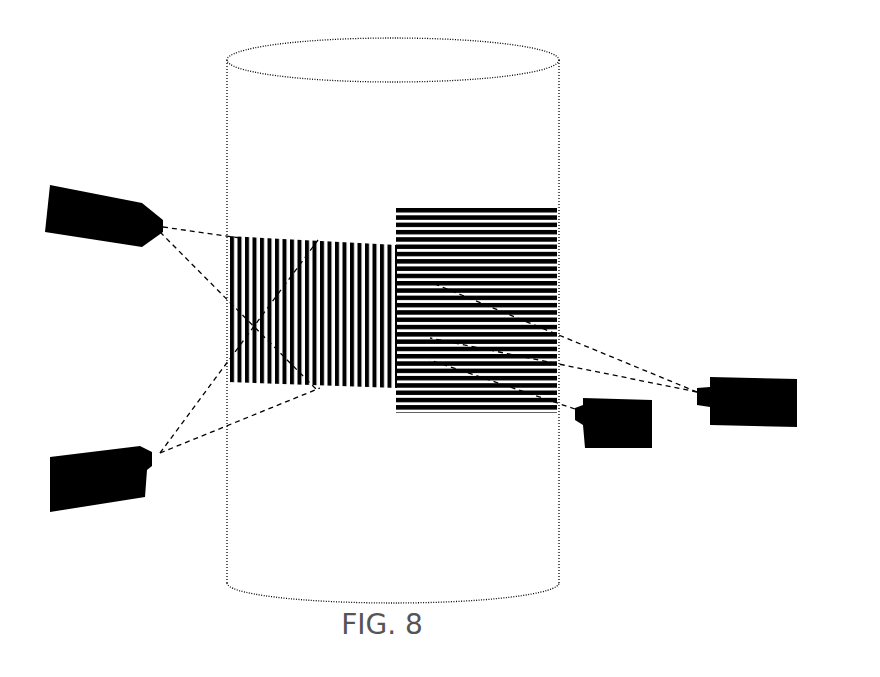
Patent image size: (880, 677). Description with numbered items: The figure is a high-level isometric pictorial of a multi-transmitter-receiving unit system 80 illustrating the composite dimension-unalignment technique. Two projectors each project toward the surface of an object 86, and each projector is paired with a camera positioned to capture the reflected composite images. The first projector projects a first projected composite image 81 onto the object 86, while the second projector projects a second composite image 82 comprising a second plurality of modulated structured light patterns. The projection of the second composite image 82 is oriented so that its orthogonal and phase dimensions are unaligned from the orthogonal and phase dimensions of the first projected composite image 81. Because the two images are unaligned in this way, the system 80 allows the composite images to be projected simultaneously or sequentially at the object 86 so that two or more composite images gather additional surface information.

The multi-transmitter-receiving unit system 80 is at (614, 16).
The first projected composite image 81 is at (294, 262).
The second composite image 82 is at (502, 198).
The object 86 is at (374, 147).